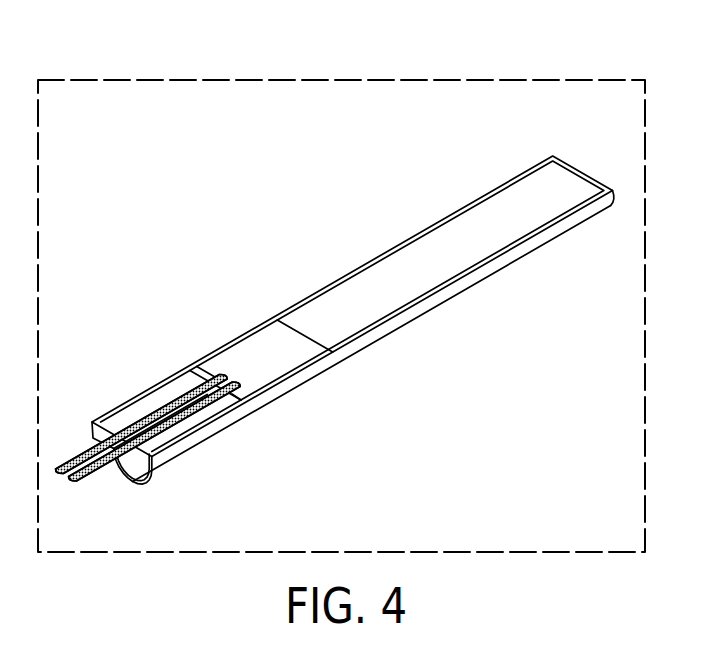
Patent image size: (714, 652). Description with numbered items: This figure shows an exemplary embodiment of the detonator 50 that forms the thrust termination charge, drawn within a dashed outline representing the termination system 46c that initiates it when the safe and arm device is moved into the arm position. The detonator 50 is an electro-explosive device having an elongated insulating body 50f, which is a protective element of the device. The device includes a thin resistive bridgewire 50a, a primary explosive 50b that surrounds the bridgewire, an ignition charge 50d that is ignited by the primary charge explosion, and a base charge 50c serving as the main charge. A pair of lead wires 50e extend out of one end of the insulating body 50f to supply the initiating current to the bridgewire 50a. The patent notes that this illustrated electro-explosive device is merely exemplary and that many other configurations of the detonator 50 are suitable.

The termination system 46c is at (340, 80).
The detonator 50 is at (335, 313).
The bridgewire 50a is at (243, 372).
The primary explosive 50b is at (276, 353).
The base charge 50c is at (390, 282).
The ignition charge 50d is at (208, 368).
The lead wires 50e is at (70, 441).
The insulating body 50f is at (178, 430).